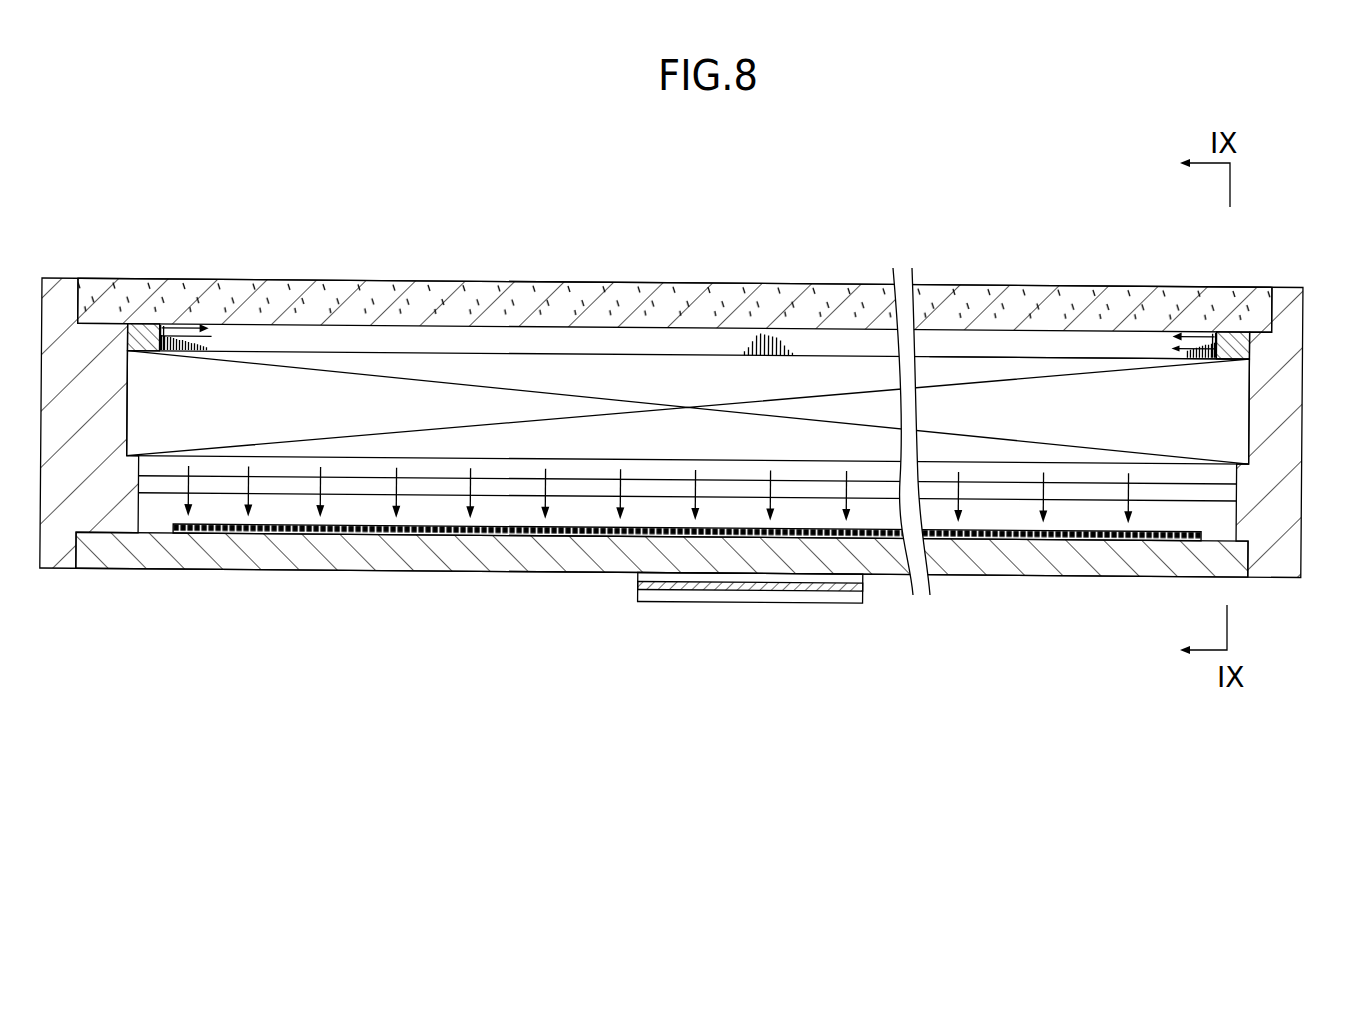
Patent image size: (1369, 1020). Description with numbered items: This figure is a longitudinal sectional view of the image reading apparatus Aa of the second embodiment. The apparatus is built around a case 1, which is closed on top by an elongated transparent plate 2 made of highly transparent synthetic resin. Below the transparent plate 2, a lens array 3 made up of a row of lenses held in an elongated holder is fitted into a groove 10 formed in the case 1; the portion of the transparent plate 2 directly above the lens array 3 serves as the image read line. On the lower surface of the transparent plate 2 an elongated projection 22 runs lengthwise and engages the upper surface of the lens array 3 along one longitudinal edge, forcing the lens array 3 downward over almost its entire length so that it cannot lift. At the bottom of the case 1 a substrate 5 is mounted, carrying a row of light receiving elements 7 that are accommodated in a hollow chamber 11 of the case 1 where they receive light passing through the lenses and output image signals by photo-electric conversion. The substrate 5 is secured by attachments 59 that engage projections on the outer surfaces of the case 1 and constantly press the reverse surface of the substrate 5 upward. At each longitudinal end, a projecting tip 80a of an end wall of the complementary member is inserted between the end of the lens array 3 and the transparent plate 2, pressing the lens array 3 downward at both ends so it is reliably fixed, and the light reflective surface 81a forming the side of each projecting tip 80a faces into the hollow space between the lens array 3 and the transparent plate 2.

The case 1 is at (1288, 378).
The transparent plate 2 is at (683, 305).
The lens array 3 is at (583, 363).
The substrate 5 is at (983, 577).
The light receiving elements 7 is at (413, 527).
The groove 10 is at (746, 433).
The hollow chamber 11 is at (517, 507).
The projection 22 is at (1052, 345).
The attachments 59 is at (820, 590).
The projecting tip 80a is at (142, 323).
The light reflective surface 81a is at (165, 327).
The image reading apparatus Aa is at (703, 395).